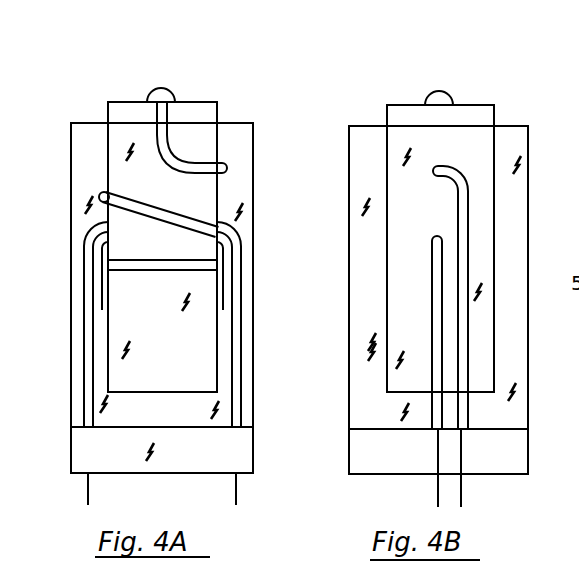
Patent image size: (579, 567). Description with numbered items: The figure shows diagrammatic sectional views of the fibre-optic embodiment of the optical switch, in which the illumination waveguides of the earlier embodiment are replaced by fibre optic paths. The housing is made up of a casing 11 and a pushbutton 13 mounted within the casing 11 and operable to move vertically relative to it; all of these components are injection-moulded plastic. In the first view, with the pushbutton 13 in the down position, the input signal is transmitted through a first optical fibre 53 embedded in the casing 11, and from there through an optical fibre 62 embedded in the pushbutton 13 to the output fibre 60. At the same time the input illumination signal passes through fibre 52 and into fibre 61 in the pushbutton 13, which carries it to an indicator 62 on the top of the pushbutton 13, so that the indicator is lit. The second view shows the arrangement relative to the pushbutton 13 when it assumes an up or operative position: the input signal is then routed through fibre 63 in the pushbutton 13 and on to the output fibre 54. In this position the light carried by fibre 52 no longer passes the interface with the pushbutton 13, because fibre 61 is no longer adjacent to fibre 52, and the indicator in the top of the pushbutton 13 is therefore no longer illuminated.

In FIG. 4A, the casing 11 is at (162, 298).
In FIG. 4B, the casing 11 is at (512, 126).
In FIG. 4A, the pushbutton 13 is at (162, 240).
In FIG. 4B, the pushbutton 13 is at (408, 105).
In FIG. 4A, the fibre 52 is at (227, 168).
In FIG. 4B, the fibre 52 is at (467, 217).
In FIG. 4A, the first optical fibre 53 is at (236, 293).
In FIG. 4B, the first optical fibre 53 is at (436, 340).
In FIG. 4A, the output fibre 54 is at (85, 350).
In FIG. 4A, the output fibre 60 is at (100, 193).
In FIG. 4A, the fibre 61 is at (181, 142).
In FIG. 4A, the optical fibre 62 is at (163, 88).
In FIG. 4A, the fibre 63 is at (146, 271).